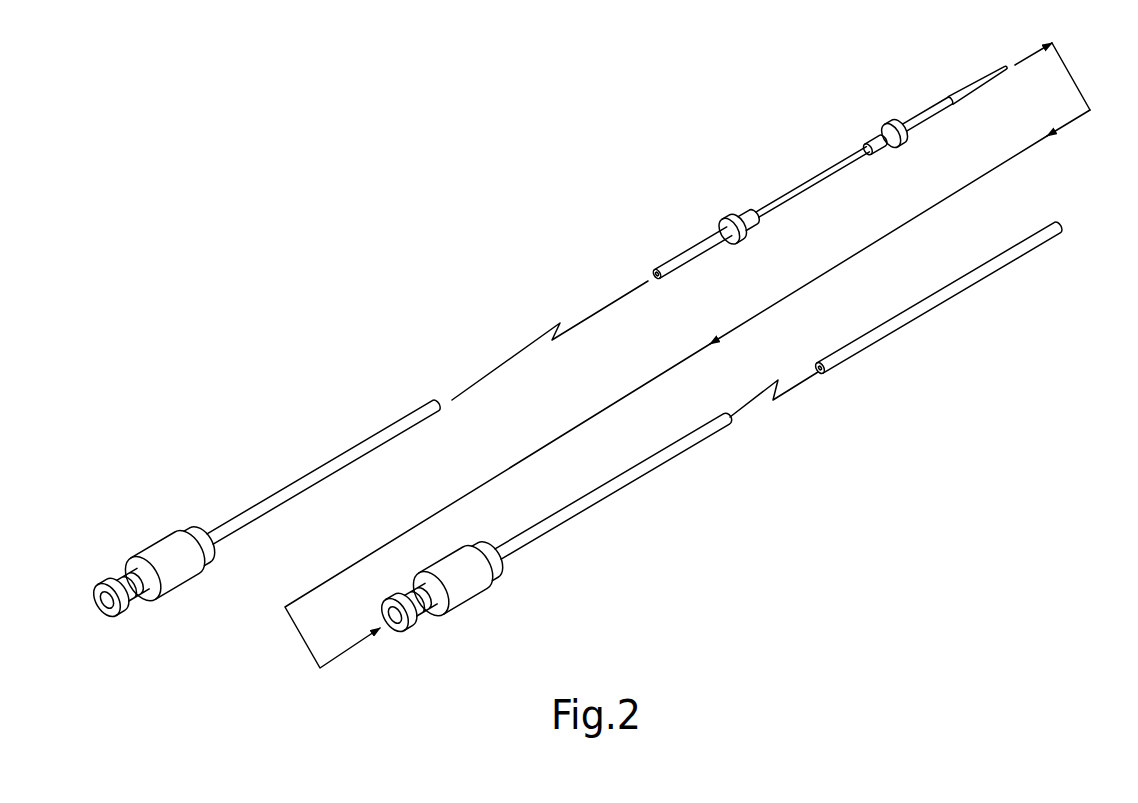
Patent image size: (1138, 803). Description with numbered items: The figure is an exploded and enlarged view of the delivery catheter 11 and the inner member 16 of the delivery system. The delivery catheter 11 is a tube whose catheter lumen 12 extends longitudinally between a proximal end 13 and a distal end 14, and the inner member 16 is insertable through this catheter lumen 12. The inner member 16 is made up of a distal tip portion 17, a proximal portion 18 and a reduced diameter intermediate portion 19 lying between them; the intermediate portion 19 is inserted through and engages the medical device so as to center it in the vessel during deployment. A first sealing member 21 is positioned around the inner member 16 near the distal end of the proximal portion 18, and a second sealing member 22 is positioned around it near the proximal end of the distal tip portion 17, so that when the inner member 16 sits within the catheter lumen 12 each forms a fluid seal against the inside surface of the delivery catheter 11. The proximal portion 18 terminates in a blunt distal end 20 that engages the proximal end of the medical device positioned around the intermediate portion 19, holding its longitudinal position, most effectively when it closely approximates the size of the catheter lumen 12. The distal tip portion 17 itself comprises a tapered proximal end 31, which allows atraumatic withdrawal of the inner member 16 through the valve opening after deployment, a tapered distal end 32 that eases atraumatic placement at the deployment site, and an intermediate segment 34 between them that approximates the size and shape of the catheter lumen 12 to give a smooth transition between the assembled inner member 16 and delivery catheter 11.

The delivery catheter 11 is at (613, 458).
The catheter lumen 12 is at (393, 629).
The proximal end 13 is at (494, 602).
The distal end 14 is at (1069, 246).
The inner member 16 is at (403, 330).
The distal tip portion 17 is at (882, 111).
The proximal portion 18 is at (305, 450).
The intermediate portion 19 is at (770, 181).
The blunt distal end 20 is at (754, 225).
The first sealing member 21 is at (731, 221).
The second sealing member 22 is at (893, 121).
The tapered proximal end 31 is at (874, 154).
The tapered distal end 32 is at (974, 82).
The intermediate segment 34 is at (920, 124).